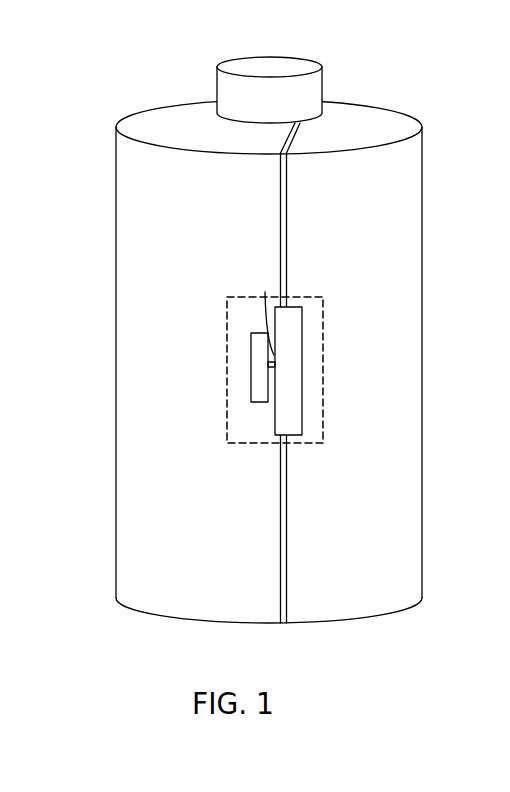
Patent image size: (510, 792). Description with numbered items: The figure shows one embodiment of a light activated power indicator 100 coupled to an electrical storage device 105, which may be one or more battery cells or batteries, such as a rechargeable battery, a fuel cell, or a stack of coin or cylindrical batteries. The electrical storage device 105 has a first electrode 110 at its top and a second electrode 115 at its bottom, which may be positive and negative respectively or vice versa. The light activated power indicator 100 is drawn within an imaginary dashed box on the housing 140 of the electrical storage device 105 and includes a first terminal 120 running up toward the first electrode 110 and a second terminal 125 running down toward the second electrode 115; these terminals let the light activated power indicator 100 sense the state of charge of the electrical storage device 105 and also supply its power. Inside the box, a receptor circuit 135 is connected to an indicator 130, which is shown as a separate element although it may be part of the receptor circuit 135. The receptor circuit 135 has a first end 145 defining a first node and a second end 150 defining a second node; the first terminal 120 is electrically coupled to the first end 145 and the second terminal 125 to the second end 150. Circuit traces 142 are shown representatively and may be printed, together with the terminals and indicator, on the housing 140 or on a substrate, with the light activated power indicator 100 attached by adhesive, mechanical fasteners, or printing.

The light activated power indicator 100 is at (280, 359).
The electrical storage device 105 is at (233, 361).
The first electrode 110 is at (297, 64).
The second electrode 115 is at (332, 631).
The first terminal 120 is at (288, 242).
The second terminal 125 is at (280, 538).
The indicator 130 is at (251, 372).
The receptor circuit 135 is at (302, 350).
The housing 140 is at (116, 286).
The circuit traces 142 is at (265, 314).
The first end 145 is at (259, 261).
The second end 150 is at (264, 453).